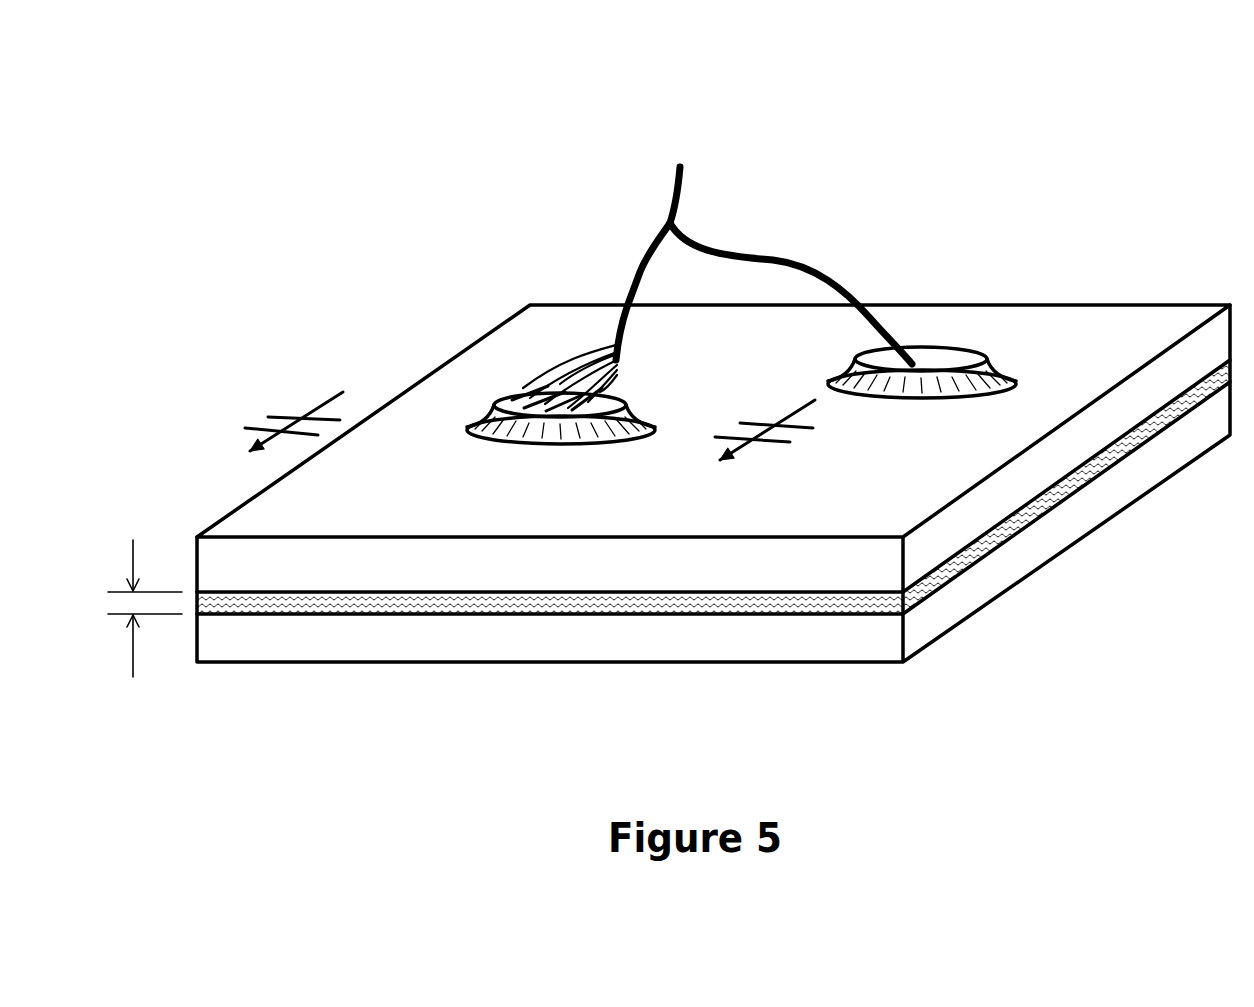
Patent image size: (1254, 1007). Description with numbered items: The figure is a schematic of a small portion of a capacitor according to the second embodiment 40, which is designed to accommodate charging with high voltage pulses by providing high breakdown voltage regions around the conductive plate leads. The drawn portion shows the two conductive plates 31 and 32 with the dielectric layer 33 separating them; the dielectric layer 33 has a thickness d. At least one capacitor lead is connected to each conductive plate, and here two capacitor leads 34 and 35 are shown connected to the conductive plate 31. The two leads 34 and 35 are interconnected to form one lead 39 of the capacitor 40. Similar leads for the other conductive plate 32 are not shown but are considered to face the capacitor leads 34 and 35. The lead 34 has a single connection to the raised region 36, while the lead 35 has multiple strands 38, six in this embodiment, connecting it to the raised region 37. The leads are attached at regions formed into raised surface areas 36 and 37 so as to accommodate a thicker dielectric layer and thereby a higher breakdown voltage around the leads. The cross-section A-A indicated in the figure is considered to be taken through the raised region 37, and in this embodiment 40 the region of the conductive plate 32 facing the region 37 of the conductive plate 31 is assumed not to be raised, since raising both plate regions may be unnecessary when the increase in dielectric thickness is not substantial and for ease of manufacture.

The second embodiment 40 is at (170, 178).
The conductive plate 31 is at (963, 522).
The conductive plate 32 is at (938, 602).
The dielectric layer 33 is at (355, 603).
The capacitor lead 34 is at (830, 267).
The capacitor lead 35 is at (630, 255).
The raised region 36 is at (990, 342).
The raised region 37 is at (480, 392).
The strands 38 is at (568, 353).
The lead 39 is at (690, 180).